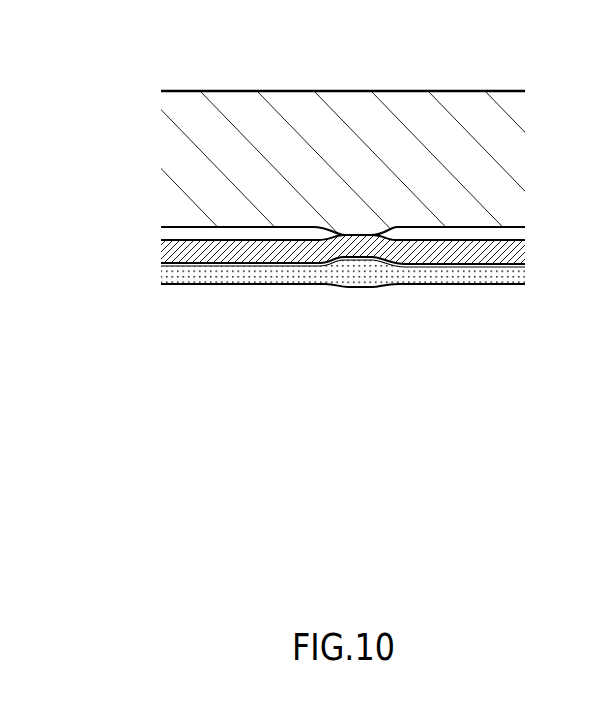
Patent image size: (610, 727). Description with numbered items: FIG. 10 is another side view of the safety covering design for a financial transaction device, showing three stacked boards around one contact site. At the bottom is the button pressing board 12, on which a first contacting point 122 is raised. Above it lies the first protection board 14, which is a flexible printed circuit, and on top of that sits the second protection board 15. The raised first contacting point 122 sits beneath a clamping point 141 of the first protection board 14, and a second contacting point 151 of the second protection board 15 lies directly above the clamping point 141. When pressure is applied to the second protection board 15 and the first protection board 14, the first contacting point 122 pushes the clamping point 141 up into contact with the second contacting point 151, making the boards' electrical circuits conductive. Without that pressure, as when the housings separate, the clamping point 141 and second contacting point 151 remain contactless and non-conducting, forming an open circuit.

The button pressing board 12 is at (162, 283).
The first contacting point 122 is at (341, 285).
The first protection board 14 is at (162, 253).
The clamping point 141 is at (398, 266).
The second protection board 15 is at (173, 157).
The second contacting point 151 is at (360, 235).